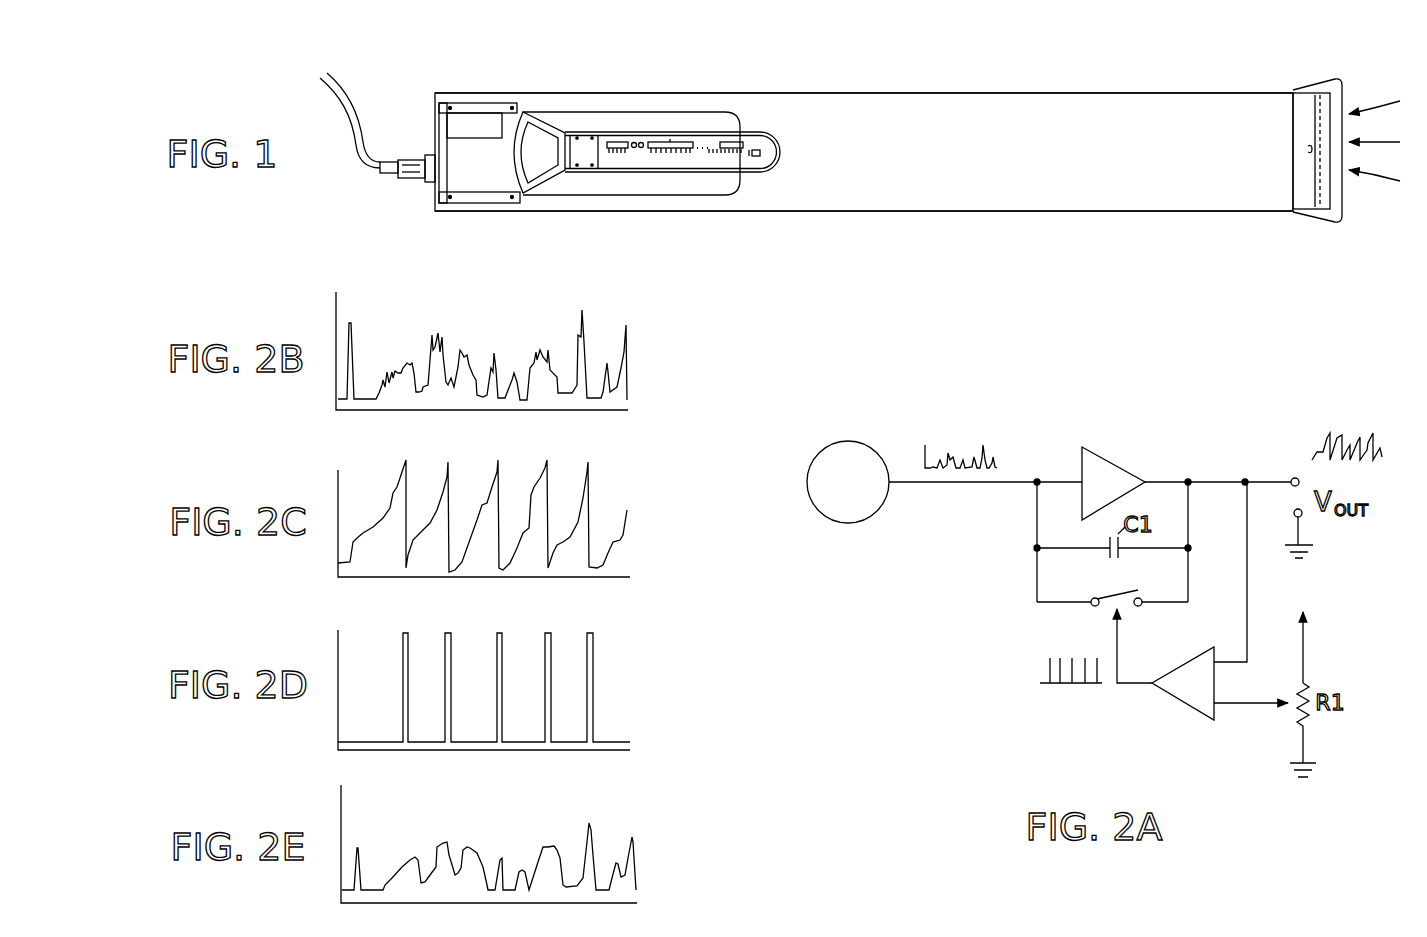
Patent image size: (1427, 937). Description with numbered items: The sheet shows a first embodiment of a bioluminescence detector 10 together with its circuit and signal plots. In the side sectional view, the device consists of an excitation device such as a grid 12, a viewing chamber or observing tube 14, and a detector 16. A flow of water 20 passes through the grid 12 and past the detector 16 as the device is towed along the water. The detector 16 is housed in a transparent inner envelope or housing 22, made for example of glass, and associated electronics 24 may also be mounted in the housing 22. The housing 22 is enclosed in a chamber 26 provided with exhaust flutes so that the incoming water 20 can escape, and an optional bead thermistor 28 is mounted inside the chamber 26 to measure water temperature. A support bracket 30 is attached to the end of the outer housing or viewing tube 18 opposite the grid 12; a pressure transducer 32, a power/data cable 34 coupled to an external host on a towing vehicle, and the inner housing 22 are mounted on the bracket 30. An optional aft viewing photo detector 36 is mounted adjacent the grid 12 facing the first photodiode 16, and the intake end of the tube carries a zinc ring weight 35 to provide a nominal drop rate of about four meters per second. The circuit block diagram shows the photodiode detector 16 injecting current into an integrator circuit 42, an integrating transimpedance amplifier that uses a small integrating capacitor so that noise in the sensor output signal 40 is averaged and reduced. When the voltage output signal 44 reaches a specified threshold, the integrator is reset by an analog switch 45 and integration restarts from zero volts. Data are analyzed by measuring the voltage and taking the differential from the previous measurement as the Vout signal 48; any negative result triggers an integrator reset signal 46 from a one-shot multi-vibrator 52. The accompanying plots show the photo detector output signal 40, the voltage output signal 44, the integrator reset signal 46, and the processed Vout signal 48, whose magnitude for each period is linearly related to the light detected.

In FIG. 1, the bioluminescence detector 10 is at (1099, 80).
In FIG. 1, the grid 12 is at (1324, 213).
In FIG. 1, the viewing chamber or observing tube 14 is at (1074, 160).
In FIG. 1, the detector 16 is at (760, 150).
In FIG. 2A, the detector 16 is at (839, 429).
In FIG. 1, the outer housing or viewing tube 18 is at (1128, 211).
In FIG. 1, the flow of water 20 is at (1377, 92).
In FIG. 1, the transparent inner envelope or housing 22 is at (782, 152).
In FIG. 1, the associated electronics 24 is at (682, 158).
In FIG. 1, the chamber 26 is at (575, 112).
In FIG. 1, the bead thermistor 28 is at (543, 192).
In FIG. 1, the support bracket 30 is at (505, 105).
In FIG. 1, the pressure transducer 32 is at (487, 130).
In FIG. 1, the power/data cable 34 is at (362, 152).
In FIG. 1, the zinc ring weight 35 is at (1318, 89).
In FIG. 1, the aft viewing photo detector 36 is at (1308, 148).
In FIG. 2B, the output signal 40 is at (635, 362).
In FIG. 2A, the output signal 40 is at (997, 453).
In FIG. 2A, the integrator circuit 42 is at (1110, 458).
In FIG. 2C, the voltage output signal 44 is at (620, 492).
In FIG. 2A, the voltage output signal 44 is at (1372, 433).
In FIG. 2A, the analog switch 45 is at (1100, 587).
In FIG. 2D, the integrator reset signal 46 is at (607, 643).
In FIG. 2E, the Vout signal 48 is at (633, 819).
In FIG. 2A, the one-shot multi-vibrator 52 is at (1177, 700).